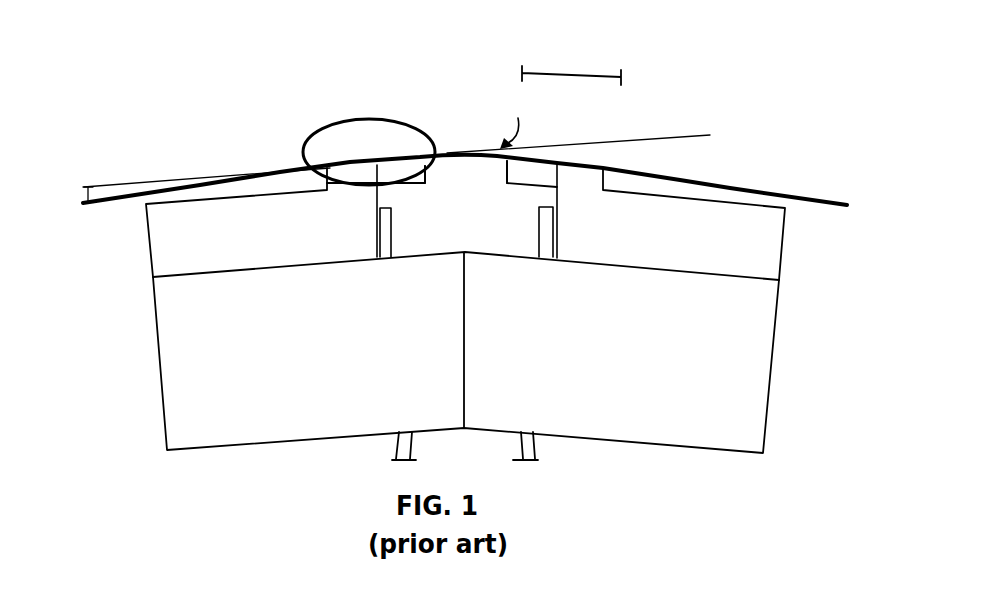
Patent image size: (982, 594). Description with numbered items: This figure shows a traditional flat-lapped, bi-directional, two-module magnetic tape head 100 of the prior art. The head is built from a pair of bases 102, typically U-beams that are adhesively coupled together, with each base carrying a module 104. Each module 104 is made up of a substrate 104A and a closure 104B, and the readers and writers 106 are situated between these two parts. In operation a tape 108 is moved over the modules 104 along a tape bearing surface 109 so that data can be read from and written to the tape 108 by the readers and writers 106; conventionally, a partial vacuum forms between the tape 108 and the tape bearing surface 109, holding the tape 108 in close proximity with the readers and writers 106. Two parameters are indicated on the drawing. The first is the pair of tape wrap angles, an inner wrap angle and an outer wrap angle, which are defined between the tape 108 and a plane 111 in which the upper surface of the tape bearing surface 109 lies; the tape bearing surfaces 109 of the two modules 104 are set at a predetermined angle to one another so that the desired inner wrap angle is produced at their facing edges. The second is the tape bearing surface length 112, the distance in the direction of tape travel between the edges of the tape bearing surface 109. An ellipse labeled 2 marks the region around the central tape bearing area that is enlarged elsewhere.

The magnetic tape head 100 is at (246, 121).
The base 102 is at (152, 344).
The module 104 is at (148, 246).
The substrate 104A is at (208, 225).
The closure 104B is at (500, 174).
The readers and writers 106 is at (377, 146).
The tape 108 is at (779, 191).
The tape bearing surface 109 is at (586, 147).
The plane 111 is at (690, 135).
The tape bearing surface length 112 is at (590, 62).
The detail region of FIG. 2 is at (317, 127).